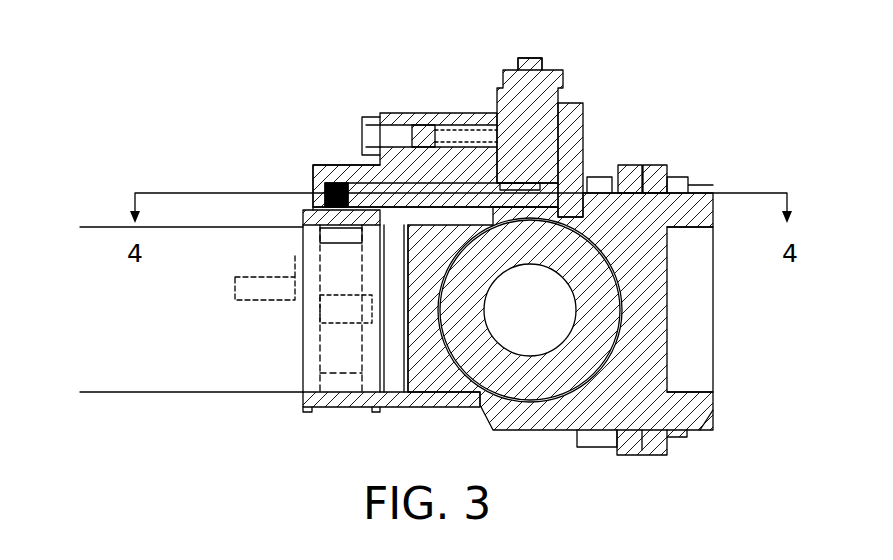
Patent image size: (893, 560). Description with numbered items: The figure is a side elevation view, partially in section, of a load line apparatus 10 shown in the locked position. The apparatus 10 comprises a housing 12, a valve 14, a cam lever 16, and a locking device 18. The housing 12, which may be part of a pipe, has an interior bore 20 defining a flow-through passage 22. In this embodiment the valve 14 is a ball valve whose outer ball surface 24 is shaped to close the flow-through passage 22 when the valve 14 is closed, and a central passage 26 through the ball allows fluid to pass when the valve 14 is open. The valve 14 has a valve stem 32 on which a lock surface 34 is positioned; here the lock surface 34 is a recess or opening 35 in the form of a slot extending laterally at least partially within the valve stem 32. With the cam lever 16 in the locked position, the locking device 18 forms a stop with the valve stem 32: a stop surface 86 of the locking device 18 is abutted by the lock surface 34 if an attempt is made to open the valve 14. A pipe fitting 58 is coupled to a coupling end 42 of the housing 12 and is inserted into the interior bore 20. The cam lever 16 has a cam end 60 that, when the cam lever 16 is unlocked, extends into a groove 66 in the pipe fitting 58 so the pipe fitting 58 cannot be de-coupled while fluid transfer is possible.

The load line apparatus 10 is at (208, 123).
The housing 12 is at (427, 410).
The valve 14 is at (622, 312).
The cam lever 16 is at (337, 310).
The locking device 18 is at (493, 187).
The interior bore 20 is at (653, 390).
The flow-through passage 22 is at (600, 392).
The surface 24 is at (615, 370).
The central passage 26 is at (530, 315).
The valve stem 32 is at (558, 146).
The lock surface 34 is at (522, 185).
The recess or opening 35 is at (563, 70).
The coupling end 42 is at (296, 358).
The pipe fitting 58 is at (183, 392).
The cam end 60 is at (301, 301).
The groove 66 is at (335, 232).
The stop surface 86 is at (541, 188).